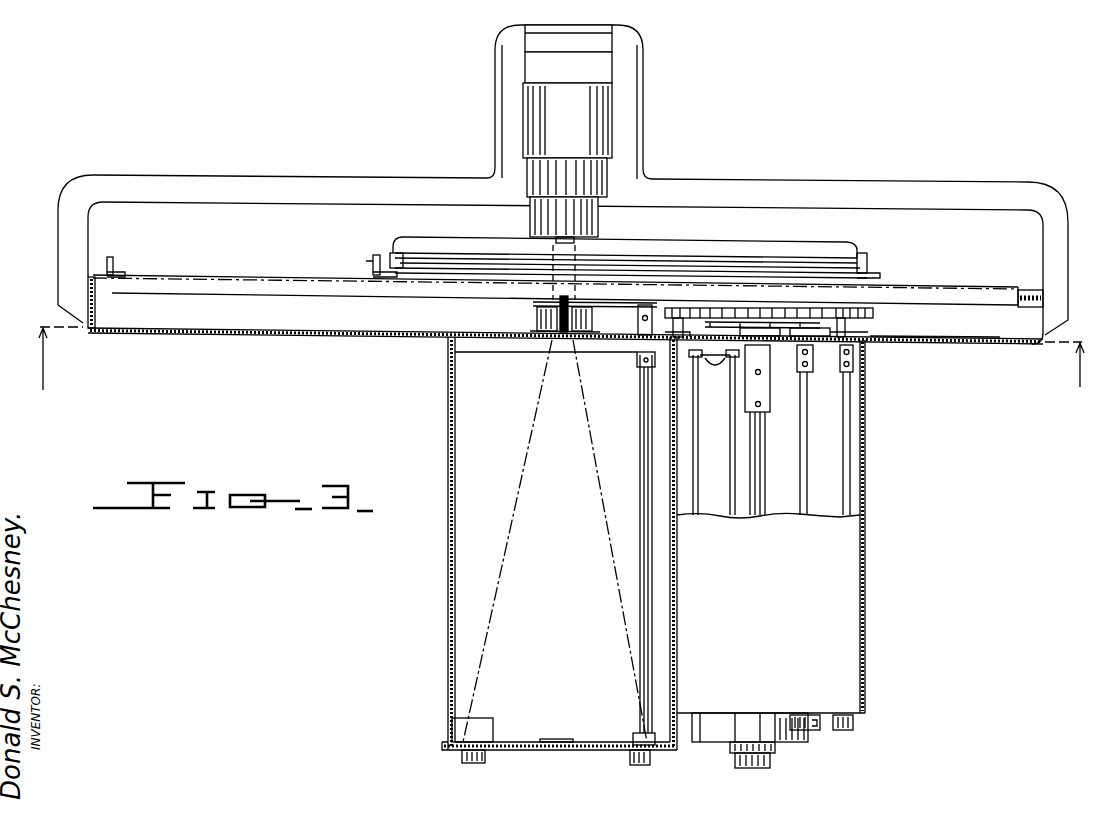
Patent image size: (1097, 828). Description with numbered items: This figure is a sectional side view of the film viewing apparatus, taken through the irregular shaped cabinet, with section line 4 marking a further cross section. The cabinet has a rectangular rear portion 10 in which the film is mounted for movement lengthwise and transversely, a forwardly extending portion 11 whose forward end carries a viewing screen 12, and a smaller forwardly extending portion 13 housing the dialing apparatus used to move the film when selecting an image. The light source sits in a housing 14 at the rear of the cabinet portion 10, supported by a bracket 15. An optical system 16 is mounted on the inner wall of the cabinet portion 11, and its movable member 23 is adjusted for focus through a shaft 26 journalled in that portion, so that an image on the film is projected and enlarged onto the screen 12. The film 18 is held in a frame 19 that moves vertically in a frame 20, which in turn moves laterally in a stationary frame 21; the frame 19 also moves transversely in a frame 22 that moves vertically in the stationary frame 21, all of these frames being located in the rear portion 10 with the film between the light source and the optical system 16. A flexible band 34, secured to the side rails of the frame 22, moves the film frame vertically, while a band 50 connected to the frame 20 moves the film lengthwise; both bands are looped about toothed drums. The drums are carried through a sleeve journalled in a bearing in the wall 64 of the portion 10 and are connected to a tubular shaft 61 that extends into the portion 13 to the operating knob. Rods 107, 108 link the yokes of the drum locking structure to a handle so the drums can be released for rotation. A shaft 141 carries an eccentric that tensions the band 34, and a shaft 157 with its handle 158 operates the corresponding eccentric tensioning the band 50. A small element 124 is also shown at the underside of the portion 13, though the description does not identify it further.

The section line 4- 4 is at (559, 372).
The rear portion 10 is at (236, 340).
The forwardly extending portion 11 is at (444, 567).
The viewing screen 12 is at (506, 743).
The smaller forwardly extending portion 13 is at (857, 592).
The housing 14 is at (567, 162).
The bracket 15 is at (718, 184).
The optical system 16 is at (526, 318).
The film 18 is at (784, 263).
The frame 19 is at (670, 273).
The frame 20 is at (360, 262).
The stationary frame 21 is at (100, 267).
The frame 22 is at (218, 270).
The movable member 23 is at (626, 320).
The shaft 26 is at (641, 424).
The flexible band 34 is at (850, 324).
The band 50 is at (880, 319).
The tubular shaft 61 is at (763, 468).
The wall 64 is at (900, 342).
The rod 107 is at (733, 455).
The rod 108 is at (696, 426).
The switch 124 is at (817, 732).
The shaft 141 is at (807, 414).
The shaft 157 is at (846, 455).
The handle 158 is at (855, 727).